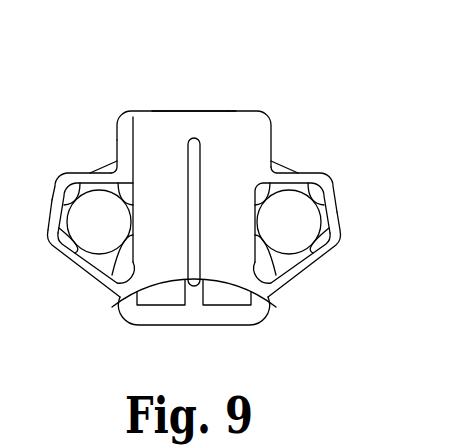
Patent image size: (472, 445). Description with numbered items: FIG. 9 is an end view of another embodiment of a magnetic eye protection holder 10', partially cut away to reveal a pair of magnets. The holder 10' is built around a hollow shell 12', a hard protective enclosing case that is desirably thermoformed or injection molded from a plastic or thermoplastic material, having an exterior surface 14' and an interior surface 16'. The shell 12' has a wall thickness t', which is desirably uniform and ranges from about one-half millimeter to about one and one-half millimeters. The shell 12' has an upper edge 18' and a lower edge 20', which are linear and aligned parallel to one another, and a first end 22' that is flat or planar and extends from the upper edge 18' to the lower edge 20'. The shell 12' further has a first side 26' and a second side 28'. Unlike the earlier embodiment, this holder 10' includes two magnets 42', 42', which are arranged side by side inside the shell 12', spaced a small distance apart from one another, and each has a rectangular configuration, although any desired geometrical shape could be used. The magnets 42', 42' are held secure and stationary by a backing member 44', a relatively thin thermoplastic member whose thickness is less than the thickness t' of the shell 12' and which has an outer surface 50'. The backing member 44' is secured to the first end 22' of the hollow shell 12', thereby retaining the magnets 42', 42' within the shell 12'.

The magnetic eye protection holder 10' is at (245, 71).
The hollow shell 12' is at (279, 142).
The exterior surface 14' is at (64, 180).
The interior surface 16' is at (86, 154).
The upper edge 18' is at (139, 100).
The lower edge 20' is at (194, 328).
The first end 22' is at (205, 86).
The first side 26' is at (313, 214).
The second side 28' is at (68, 211).
The magnets 42' is at (181, 329).
The backing member 44' is at (297, 267).
The outer surface 50' is at (88, 273).
The thickness t' is at (121, 185).